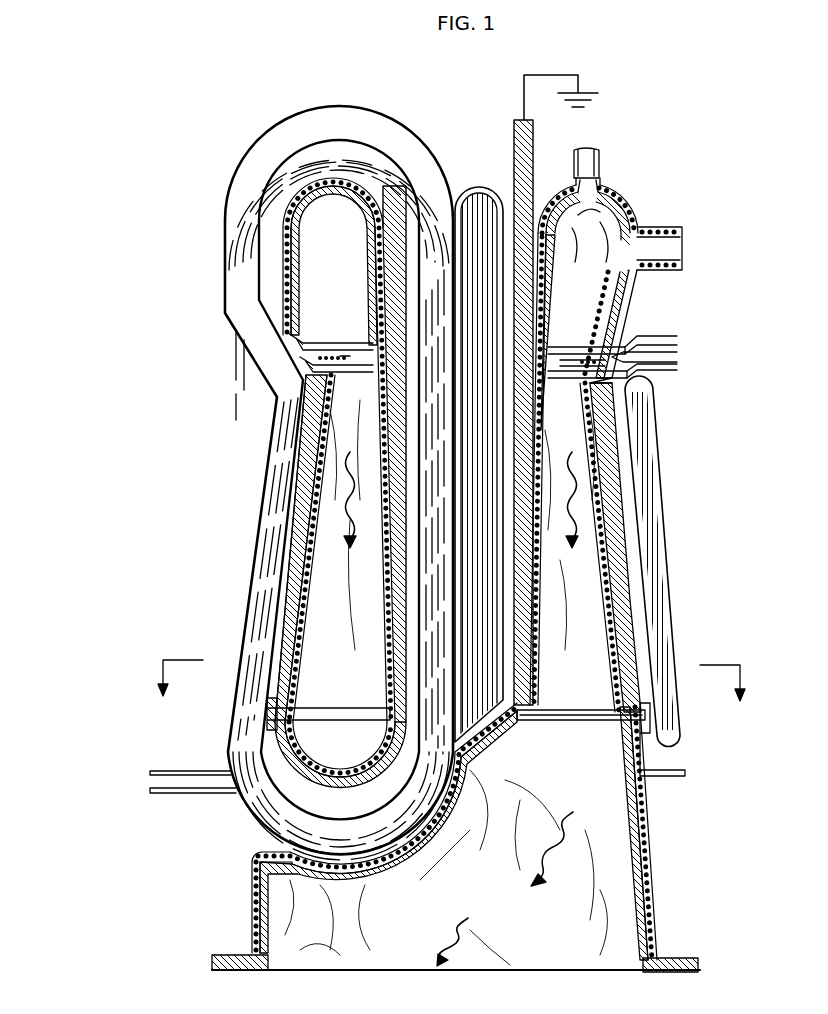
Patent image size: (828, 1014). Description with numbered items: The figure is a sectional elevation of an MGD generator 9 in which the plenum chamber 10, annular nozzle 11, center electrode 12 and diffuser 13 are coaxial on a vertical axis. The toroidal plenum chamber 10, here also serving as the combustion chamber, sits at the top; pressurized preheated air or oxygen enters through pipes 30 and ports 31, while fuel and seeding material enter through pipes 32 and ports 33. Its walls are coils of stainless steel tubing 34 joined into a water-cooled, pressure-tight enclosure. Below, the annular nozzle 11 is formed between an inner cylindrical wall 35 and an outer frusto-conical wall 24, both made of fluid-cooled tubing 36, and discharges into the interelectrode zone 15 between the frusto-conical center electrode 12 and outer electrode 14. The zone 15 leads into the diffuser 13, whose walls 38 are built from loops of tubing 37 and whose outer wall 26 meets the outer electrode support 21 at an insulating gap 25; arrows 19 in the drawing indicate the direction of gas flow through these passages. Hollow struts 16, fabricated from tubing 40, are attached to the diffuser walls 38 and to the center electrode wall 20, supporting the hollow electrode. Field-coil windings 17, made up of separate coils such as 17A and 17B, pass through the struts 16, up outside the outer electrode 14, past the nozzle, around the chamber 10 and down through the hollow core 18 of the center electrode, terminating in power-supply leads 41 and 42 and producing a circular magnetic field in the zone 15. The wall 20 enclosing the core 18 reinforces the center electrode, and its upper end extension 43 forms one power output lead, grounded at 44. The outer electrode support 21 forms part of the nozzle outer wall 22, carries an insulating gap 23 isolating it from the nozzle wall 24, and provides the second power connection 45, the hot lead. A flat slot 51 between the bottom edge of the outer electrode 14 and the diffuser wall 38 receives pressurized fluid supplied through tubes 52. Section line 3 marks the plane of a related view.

The section line 3- 3 is at (449, 693).
The MGD generator 9 is at (454, 475).
The plenum chamber 10 is at (628, 209).
The annular nozzle 11 is at (614, 332).
The center electrode 12 is at (531, 575).
The diffuser 13 is at (649, 833).
The outer electrode 14 is at (301, 615).
The interelectrode zone 15 is at (580, 631).
The hollow struts 16 is at (420, 682).
The field-coil windings 17 is at (262, 762).
The field coil 17A is at (388, 129).
The field coil 17B is at (468, 571).
The hollow core 18 is at (418, 280).
The gas flow direction 19 is at (588, 475).
The center electrode support wall 20 is at (392, 190).
The outer electrode support 21 is at (315, 418).
The outer wall of the annular nozzle 22 is at (298, 341).
The insulating gap 23 is at (344, 356).
The nozzle wall 24 is at (628, 343).
The insulating gap 25 is at (295, 710).
The outer wall of the diffuser 26 is at (295, 752).
The pipes 30 is at (683, 226).
The ports 31 is at (623, 252).
The pipes 32 is at (597, 151).
The ports 33 is at (574, 183).
The stainless steel tubing 34 is at (288, 224).
The inner cylindrical wall 35 is at (546, 318).
The fluid-cooled tubing 36 is at (306, 573).
The stainless steel tubing 37 is at (648, 833).
The diffuser walls 38 is at (253, 906).
The stainless steel tubing 40 is at (430, 855).
The power-supply lead 41 is at (150, 770).
The power-supply lead 42 is at (145, 795).
The upper end extension 43 is at (516, 165).
The ground 44 is at (586, 88).
The electrical power connection 45 is at (680, 343).
The nozzle or slot 51 is at (579, 710).
The tubes 52 is at (668, 778).